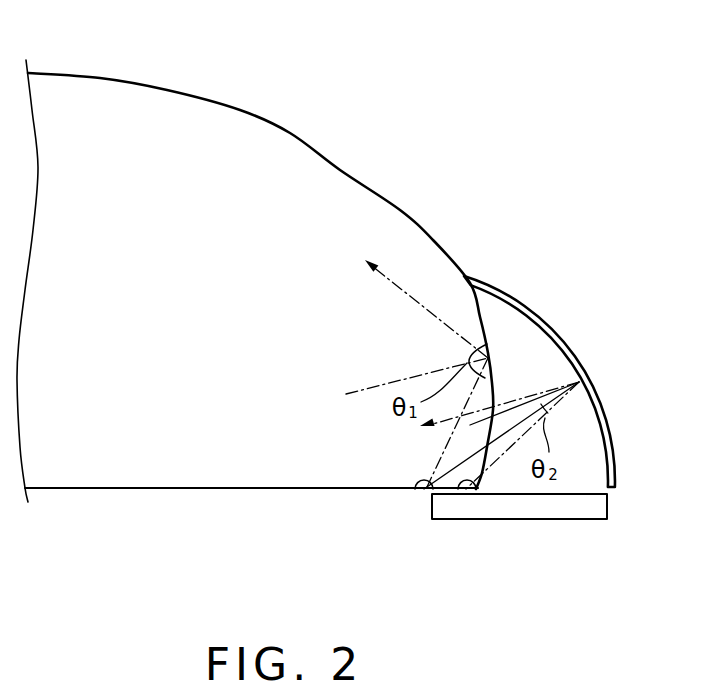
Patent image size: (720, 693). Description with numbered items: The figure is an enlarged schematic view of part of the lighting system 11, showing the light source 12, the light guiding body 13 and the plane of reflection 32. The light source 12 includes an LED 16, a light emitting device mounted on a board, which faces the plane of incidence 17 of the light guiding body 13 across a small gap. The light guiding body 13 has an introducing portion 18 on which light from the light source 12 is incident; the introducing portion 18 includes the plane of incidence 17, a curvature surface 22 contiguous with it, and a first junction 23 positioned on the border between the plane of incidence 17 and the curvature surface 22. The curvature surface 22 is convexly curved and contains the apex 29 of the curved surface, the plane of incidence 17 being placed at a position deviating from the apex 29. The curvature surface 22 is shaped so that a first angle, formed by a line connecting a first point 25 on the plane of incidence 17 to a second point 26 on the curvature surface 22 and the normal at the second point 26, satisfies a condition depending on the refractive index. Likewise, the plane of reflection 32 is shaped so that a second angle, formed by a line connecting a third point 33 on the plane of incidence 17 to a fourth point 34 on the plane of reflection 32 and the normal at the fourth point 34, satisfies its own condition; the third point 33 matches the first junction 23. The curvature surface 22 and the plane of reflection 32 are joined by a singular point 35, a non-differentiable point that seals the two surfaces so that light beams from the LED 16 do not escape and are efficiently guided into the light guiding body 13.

The lighting system 11 is at (525, 110).
The light source 12 is at (432, 548).
The light guiding body 13 is at (144, 110).
The LED 16 is at (583, 520).
The plane of incidence 17 is at (390, 490).
The introducing portion 18 is at (280, 180).
The curvature surface 22 is at (488, 346).
The first junction 23 is at (461, 492).
The first point 25 is at (418, 491).
The second point 26 is at (488, 357).
The apex 29 is at (494, 398).
The plane of reflection 32 is at (614, 430).
The third point 33 is at (470, 583).
The fourth point 34 is at (583, 379).
The singular point 35 is at (471, 282).